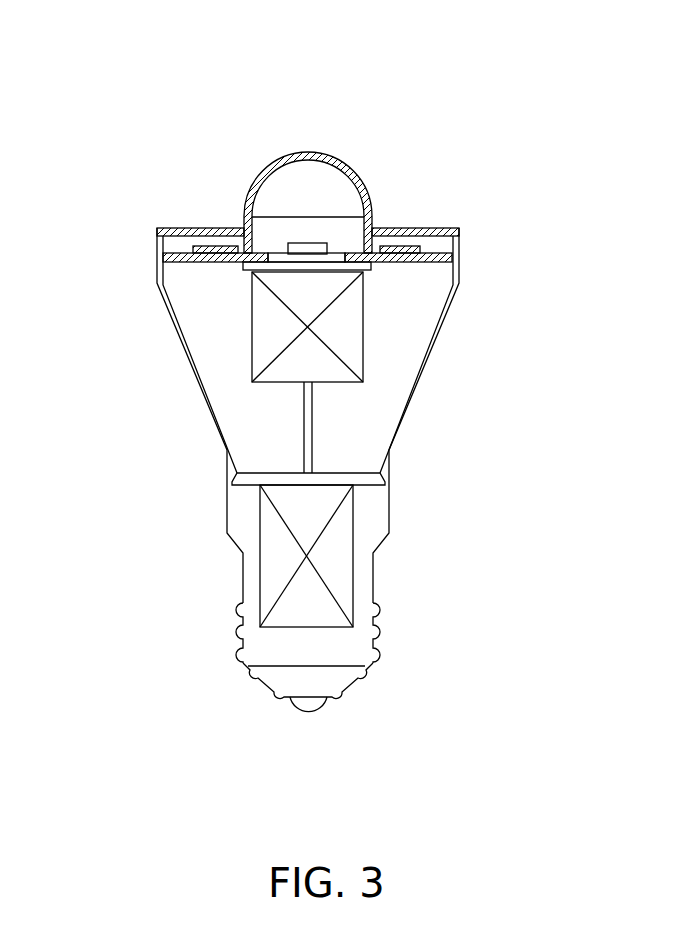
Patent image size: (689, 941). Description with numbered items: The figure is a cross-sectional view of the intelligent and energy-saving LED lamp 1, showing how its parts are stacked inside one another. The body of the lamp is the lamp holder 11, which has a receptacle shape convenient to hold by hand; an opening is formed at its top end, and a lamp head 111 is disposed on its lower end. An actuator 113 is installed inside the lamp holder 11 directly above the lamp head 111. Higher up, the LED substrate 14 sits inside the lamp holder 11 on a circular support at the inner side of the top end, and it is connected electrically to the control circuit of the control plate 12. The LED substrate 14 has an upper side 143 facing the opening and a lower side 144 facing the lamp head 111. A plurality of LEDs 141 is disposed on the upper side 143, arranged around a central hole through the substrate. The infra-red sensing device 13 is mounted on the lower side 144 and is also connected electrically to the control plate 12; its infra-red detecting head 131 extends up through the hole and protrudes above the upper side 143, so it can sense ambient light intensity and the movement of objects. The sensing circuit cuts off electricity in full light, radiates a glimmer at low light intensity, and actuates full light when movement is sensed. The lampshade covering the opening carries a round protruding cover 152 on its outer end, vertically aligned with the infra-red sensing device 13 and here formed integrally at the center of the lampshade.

The LED lamp 1 is at (178, 458).
The lamp holder 11 is at (423, 377).
The control plate 12 is at (365, 482).
The infra-red sensing device 13 is at (332, 293).
The LED substrate 14 is at (183, 252).
The lamp head 111 is at (253, 675).
The actuator 113 is at (318, 558).
The infra-red detecting head 131 is at (315, 247).
The LEDs 141 is at (423, 251).
The upper side 143 is at (233, 251).
The lower side 144 is at (208, 260).
The protruding cover 152 is at (323, 154).